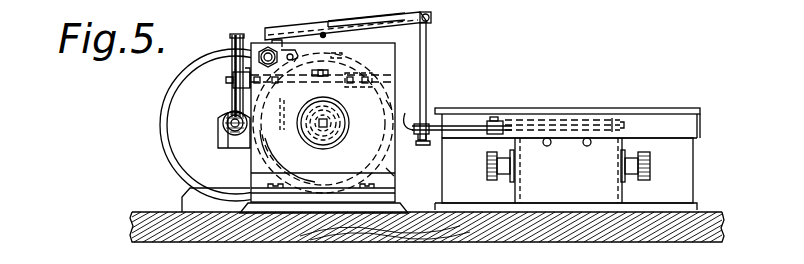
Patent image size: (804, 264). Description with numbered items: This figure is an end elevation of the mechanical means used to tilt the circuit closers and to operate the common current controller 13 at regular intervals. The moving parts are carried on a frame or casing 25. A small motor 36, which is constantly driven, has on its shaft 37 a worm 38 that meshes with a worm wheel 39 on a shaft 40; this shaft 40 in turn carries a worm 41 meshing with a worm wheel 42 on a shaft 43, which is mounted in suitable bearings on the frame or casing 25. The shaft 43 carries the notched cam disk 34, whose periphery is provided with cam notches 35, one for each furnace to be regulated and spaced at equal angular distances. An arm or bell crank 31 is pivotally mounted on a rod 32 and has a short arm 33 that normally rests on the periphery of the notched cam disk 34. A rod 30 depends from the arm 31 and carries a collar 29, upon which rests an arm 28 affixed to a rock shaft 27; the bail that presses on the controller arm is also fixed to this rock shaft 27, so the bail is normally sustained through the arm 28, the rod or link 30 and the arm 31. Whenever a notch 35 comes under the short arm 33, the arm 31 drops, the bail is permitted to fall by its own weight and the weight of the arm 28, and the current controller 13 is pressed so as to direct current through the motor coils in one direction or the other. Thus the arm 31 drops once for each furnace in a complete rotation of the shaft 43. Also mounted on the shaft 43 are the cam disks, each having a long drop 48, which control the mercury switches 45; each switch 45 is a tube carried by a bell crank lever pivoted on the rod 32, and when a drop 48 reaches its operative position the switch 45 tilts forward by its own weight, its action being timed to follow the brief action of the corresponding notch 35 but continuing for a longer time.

The current controller 13 is at (688, 155).
The frame or casing 25 is at (257, 160).
The rock shaft 27 is at (510, 135).
The arm 28 is at (457, 128).
The collar 29 is at (412, 112).
The rod 30 is at (427, 52).
The arm or bell crank 31 is at (432, 17).
The rod 32 is at (263, 47).
The short arm 33 is at (288, 52).
The notched cam disk 34 is at (350, 63).
The cam notches 35 is at (389, 103).
The small motor 36 is at (162, 130).
The shaft 37 is at (222, 138).
The worm 38 is at (218, 122).
The worm wheel 39 is at (233, 100).
The shaft 40 is at (230, 78).
The worm 41 is at (331, 55).
The worm wheel 42 is at (281, 153).
The shaft 43 is at (332, 122).
The mercury switch 45 is at (392, 17).
The long drop 48 is at (278, 163).